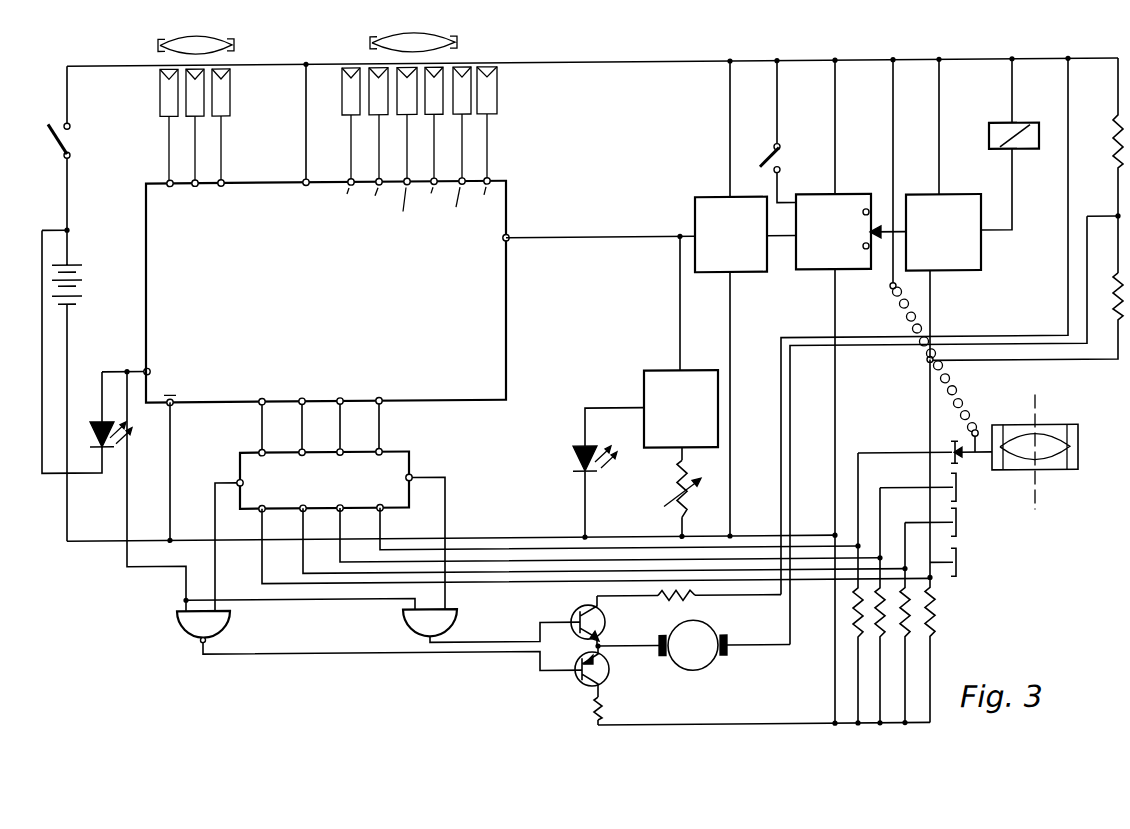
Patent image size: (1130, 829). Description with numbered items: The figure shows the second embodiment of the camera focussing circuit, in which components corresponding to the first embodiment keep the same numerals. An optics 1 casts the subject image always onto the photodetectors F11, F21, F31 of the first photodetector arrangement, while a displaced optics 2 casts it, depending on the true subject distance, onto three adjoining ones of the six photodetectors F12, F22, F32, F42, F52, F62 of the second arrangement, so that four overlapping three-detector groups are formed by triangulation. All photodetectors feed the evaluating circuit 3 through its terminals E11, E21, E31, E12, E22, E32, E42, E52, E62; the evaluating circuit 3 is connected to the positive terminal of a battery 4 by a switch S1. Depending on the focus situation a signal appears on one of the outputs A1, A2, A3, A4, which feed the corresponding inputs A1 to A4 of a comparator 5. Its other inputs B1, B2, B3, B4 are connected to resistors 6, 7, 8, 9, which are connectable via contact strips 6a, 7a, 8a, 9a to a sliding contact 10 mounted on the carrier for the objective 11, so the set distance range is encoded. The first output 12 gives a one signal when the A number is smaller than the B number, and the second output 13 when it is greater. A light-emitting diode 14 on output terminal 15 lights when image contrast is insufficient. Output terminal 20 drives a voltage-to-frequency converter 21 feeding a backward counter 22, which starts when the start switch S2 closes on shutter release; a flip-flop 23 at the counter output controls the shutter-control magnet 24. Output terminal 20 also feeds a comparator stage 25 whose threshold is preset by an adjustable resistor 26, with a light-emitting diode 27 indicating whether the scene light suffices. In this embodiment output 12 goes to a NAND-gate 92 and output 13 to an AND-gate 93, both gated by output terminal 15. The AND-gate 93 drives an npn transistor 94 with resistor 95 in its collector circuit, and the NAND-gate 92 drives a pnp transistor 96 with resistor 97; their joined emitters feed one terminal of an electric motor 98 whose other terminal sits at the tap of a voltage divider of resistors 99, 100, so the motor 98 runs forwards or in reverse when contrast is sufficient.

The optics 1 is at (176, 44).
The optics 2 is at (436, 48).
The evaluating circuit 3 is at (324, 291).
The battery 4 is at (84, 282).
The comparator 5 is at (329, 494).
The resistor 6 is at (936, 614).
The resistor 7 is at (904, 630).
The resistor 8 is at (877, 626).
The resistor 9 is at (855, 610).
The contact strip 6a is at (958, 568).
The contact strip 7a is at (958, 528).
The contact strip 8a is at (958, 494).
The contact strip 9a is at (954, 442).
The sliding contact 10 is at (976, 432).
The objective 11 is at (1048, 430).
The first output of comparator 12 is at (238, 478).
The second output of comparator 13 is at (413, 476).
The light-emitting diode 14 is at (100, 400).
The output terminal 15 is at (149, 366).
The output terminal 20 is at (509, 240).
The voltage-to-frequency converter 21 is at (744, 272).
The counter 22 is at (852, 272).
The flip-flop 23 is at (965, 262).
The shutter-control magnet 24 is at (990, 132).
The comparator stage 25 is at (662, 382).
The adjustable resistor 26 is at (667, 500).
The light-emitting diode 27 is at (572, 455).
The NAND-gate 92 is at (224, 620).
The AND-gate 93 is at (450, 620).
The transistor 94 is at (573, 609).
The resistor 95 is at (696, 598).
The transistor 96 is at (608, 676).
The resistor 97 is at (594, 708).
The electric motor 98 is at (712, 660).
The resistor 99 is at (1114, 142).
The resistor 100 is at (1112, 290).
The switch S1 is at (70, 142).
The start switch S2 is at (772, 148).
The photodetector F11 is at (166, 96).
The photodetector F21 is at (195, 100).
The photodetector F31 is at (222, 104).
The photodetector F12 is at (350, 89).
The photodetector F22 is at (378, 98).
The photodetector F32 is at (407, 100).
The photodetector F42 is at (434, 98).
The photodetector F52 is at (463, 100).
The photodetector F62 is at (490, 88).
The input E11 is at (165, 194).
The input E21 is at (196, 194).
The input E31 is at (225, 194).
The input E12 is at (336, 192).
The input E22 is at (371, 195).
The input E32 is at (397, 205).
The input E42 is at (432, 191).
The input E52 is at (445, 202).
The input E62 is at (479, 195).
The output / input A1 is at (261, 427).
The output / input A2 is at (302, 426).
The output / input A3 is at (340, 426).
The output / input A4 is at (379, 426).
The comparator input B1 is at (260, 501).
The comparator input B2 is at (301, 500).
The comparator input B3 is at (339, 500).
The comparator input B4 is at (378, 500).